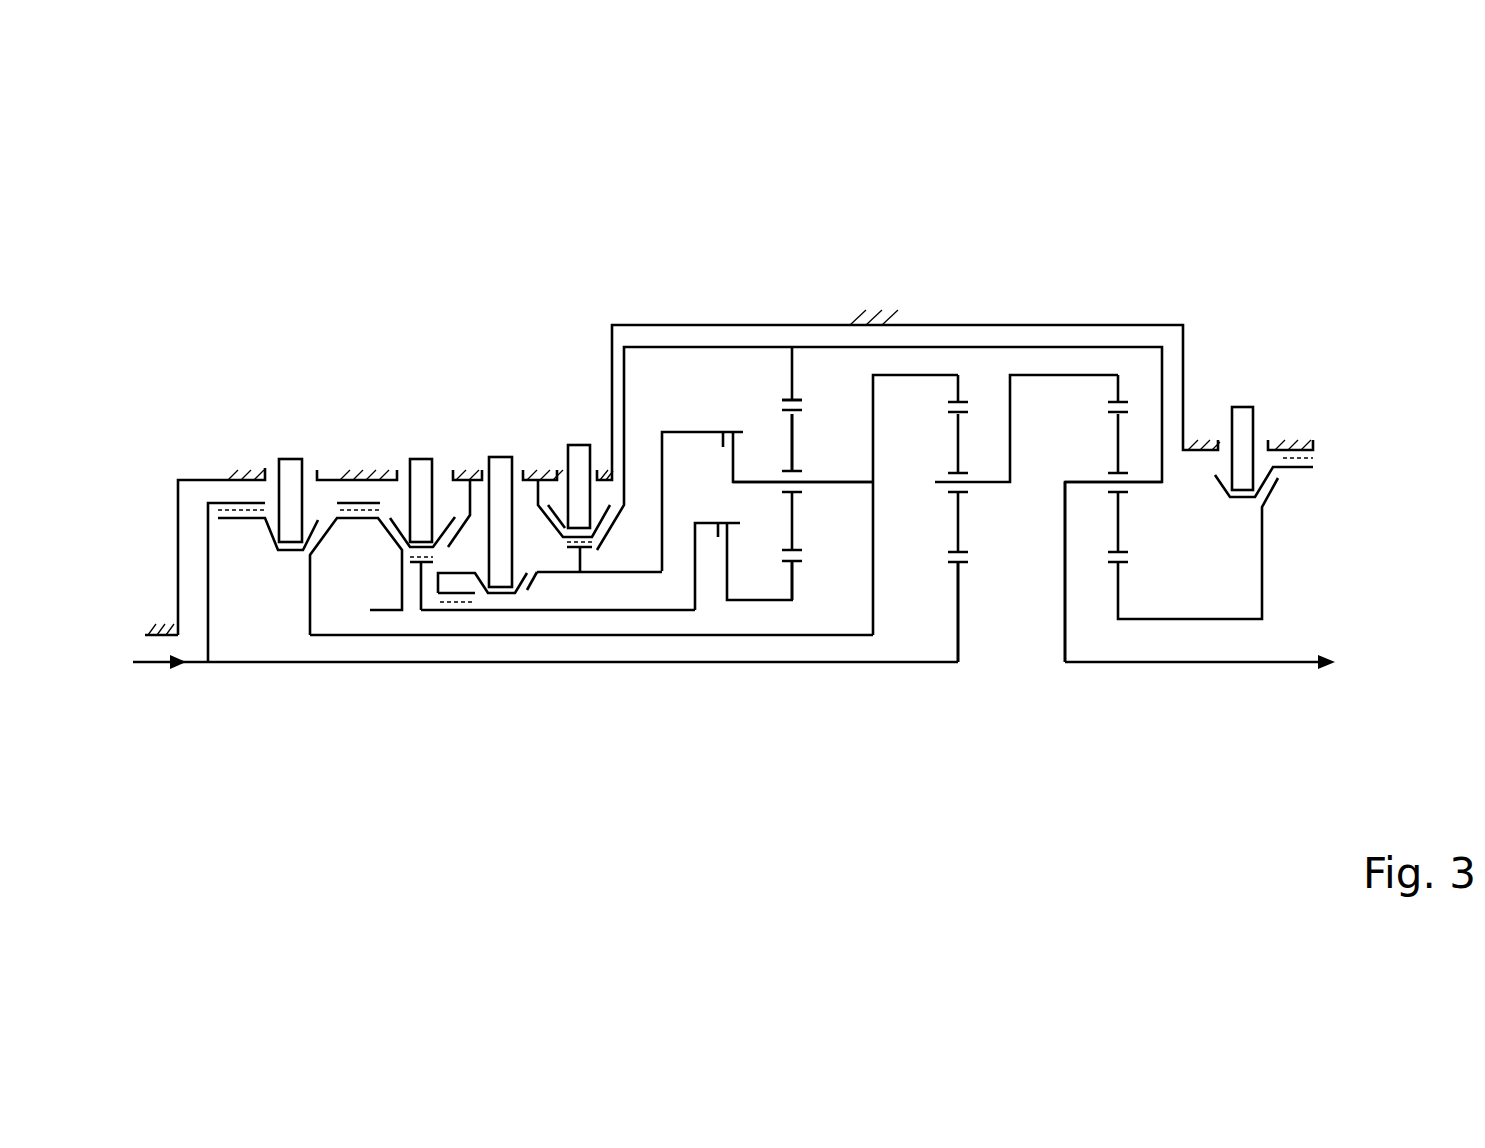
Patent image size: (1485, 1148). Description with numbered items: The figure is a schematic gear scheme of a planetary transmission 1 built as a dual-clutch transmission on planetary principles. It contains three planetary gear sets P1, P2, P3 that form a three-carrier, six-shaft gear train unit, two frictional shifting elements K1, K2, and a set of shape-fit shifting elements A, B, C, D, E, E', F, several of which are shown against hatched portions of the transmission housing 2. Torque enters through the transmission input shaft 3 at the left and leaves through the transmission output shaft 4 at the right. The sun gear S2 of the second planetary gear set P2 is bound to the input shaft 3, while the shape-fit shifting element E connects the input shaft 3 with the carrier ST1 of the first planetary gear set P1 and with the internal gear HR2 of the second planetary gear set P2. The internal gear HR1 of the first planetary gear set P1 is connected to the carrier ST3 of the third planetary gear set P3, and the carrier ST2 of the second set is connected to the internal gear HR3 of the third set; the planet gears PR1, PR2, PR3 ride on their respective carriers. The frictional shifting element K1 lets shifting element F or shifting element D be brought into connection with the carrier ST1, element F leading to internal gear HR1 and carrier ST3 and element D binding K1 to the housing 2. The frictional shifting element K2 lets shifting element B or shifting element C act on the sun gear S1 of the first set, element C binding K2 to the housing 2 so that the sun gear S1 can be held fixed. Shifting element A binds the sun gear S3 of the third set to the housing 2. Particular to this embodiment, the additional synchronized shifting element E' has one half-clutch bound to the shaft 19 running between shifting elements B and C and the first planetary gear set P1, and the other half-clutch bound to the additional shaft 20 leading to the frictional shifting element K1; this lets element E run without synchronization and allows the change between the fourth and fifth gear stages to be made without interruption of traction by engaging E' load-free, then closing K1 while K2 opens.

The planetary transmission 1 is at (262, 266).
The transmission housing 2 is at (232, 472).
The transmission input shaft 3 is at (153, 665).
The transmission output shaft 4 is at (1233, 665).
The shaft 19 is at (468, 636).
The shaft 20 is at (598, 575).
The shape-fit shifting element A is at (1264, 466).
The shape-fit shifting element B is at (531, 534).
The shape-fit shifting element C is at (480, 522).
The shape-fit shifting element D is at (569, 508).
The shape-fit shifting element E is at (310, 547).
The synchronized shape-fit shifting element E' is at (503, 591).
The shape-fit shifting element F is at (879, 504).
The first frictional shifting element K1 is at (767, 459).
The second frictional shifting element K2 is at (748, 551).
The internal gear of the first planetary gear set HR1 is at (790, 398).
The planet gear of the first planetary gear set PR1 is at (785, 423).
The carrier of the first planetary gear set ST1 is at (832, 478).
The sun gear of the first planetary gear set S1 is at (793, 577).
The first planetary gear set P1 is at (773, 592).
The internal gear of the second planetary gear set HR2 is at (957, 400).
The planet gear of the second planetary gear set PR2 is at (957, 437).
The carrier of the second planetary gear set ST2 is at (987, 478).
The sun gear of the second planetary gear set S2 is at (960, 585).
The second planetary gear set P2 is at (968, 632).
The internal gear of the third planetary gear set HR3 is at (1118, 398).
The planet gear of the third planetary gear set PR3 is at (1125, 437).
The carrier of the third planetary gear set ST3 is at (1080, 478).
The sun gear of the third planetary gear set S3 is at (1123, 587).
The third planetary gear set P3 is at (1052, 637).